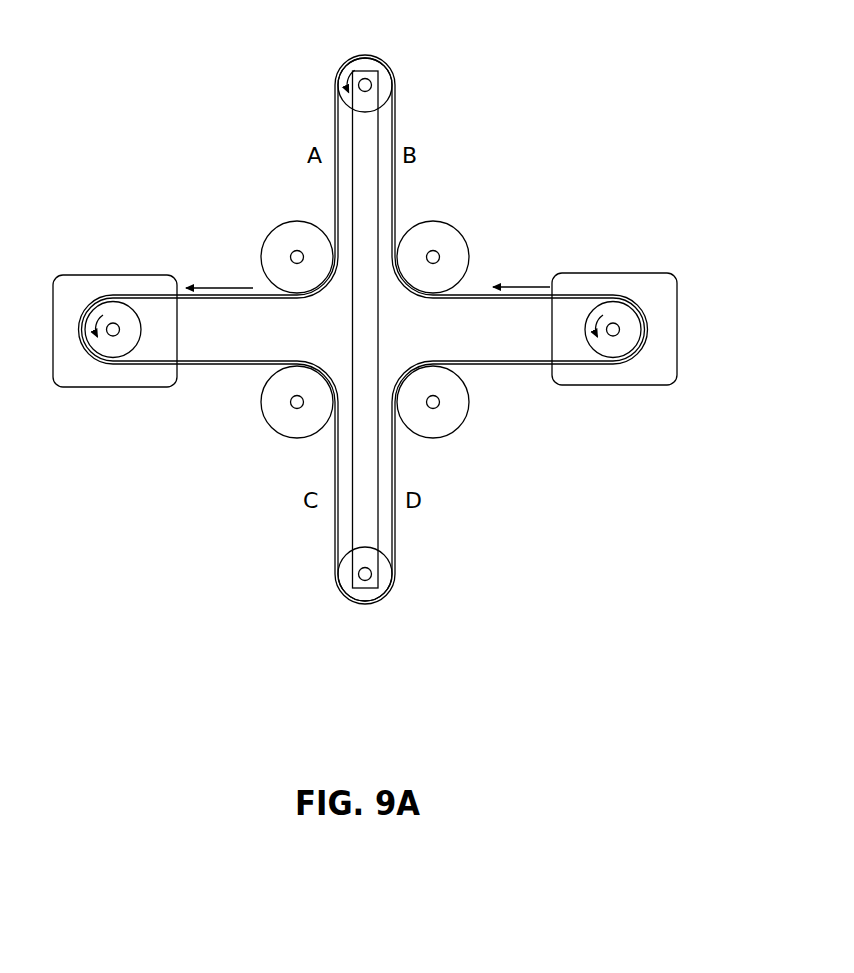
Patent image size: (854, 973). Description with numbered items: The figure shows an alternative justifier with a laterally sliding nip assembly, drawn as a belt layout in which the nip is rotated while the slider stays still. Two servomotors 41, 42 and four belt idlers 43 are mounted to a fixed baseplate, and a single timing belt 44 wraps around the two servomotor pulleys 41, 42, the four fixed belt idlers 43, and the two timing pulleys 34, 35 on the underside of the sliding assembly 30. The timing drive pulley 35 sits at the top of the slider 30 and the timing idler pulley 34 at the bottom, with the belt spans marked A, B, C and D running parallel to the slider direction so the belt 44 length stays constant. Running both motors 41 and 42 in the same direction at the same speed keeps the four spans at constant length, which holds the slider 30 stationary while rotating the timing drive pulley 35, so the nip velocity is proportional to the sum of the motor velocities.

The sliding assembly 30 is at (365, 262).
The timing idler pulley 34 is at (385, 574).
The timing drive pulley 35 is at (385, 83).
The servomotor 41 is at (123, 317).
The servomotor 42 is at (620, 343).
The belt idler 43 is at (292, 242).
The timing belt 44 is at (247, 366).